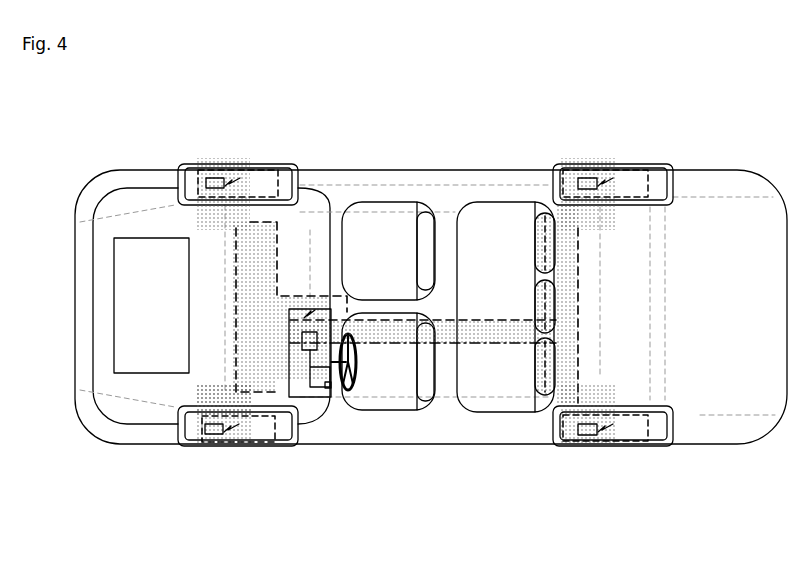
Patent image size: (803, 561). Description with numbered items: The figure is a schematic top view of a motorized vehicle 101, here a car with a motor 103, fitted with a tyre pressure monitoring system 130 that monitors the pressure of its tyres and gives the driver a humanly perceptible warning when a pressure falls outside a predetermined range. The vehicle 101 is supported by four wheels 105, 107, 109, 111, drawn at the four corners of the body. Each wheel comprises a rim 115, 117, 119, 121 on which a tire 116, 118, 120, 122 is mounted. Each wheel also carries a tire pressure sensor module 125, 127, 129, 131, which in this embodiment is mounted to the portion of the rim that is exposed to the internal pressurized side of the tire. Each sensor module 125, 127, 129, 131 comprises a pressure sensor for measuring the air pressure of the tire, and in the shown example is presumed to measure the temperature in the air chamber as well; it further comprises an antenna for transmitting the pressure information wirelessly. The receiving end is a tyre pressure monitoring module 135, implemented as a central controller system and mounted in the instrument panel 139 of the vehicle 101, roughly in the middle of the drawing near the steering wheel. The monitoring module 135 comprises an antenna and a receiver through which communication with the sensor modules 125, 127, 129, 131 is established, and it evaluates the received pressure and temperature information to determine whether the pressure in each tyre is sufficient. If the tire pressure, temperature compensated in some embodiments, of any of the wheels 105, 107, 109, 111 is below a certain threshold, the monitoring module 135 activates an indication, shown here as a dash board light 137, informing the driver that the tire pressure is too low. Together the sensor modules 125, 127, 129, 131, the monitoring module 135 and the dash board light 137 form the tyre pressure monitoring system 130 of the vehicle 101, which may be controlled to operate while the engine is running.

The motorized vehicle 101 is at (436, 120).
The motor 103 is at (168, 251).
The wheel 105 is at (286, 147).
The wheel 107 is at (287, 462).
The wheel 109 is at (658, 148).
The wheel 111 is at (660, 462).
The rim 115 is at (261, 172).
The tire 116 is at (193, 172).
The rim 117 is at (267, 435).
The tire 118 is at (198, 438).
The rim 119 is at (638, 172).
The tire 120 is at (563, 172).
The rim 121 is at (640, 435).
The tire 122 is at (566, 440).
The tire pressure sensor module 125 is at (214, 178).
The tire pressure sensor module 127 is at (216, 430).
The tire pressure sensor module 129 is at (590, 178).
The tyre pressure monitoring system 130 is at (490, 323).
The tire pressure sensor module 131 is at (590, 432).
The tyre pressure monitoring module 135 is at (300, 348).
The dash board light 137 is at (328, 395).
The instrument panel 139 is at (299, 378).